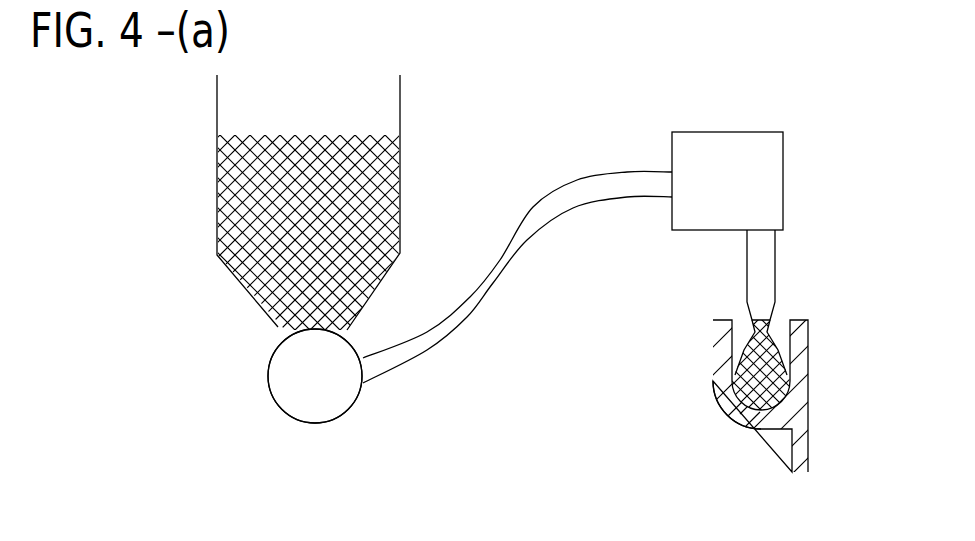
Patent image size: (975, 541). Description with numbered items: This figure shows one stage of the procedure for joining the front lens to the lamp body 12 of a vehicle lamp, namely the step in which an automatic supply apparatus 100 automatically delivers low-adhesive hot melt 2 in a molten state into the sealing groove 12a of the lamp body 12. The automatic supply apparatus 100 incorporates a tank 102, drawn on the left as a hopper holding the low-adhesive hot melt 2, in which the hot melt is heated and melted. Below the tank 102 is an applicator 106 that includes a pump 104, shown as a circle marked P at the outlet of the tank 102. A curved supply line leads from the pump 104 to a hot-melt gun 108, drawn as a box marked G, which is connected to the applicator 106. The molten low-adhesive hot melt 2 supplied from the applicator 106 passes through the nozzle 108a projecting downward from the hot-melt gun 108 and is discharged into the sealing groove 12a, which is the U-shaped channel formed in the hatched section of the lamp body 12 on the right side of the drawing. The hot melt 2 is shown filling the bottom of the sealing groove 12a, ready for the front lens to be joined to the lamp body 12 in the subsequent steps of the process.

The low-adhesive hot melt 2 is at (358, 212).
The automatic supply apparatus 100 is at (478, 359).
The tank 102 is at (217, 220).
The pump 104 is at (270, 397).
The applicator 106 is at (350, 422).
The hot-melt gun 108 is at (740, 128).
The nozzle 108a is at (758, 269).
The lamp body 12 is at (788, 442).
The sealing groove 12a is at (742, 408).